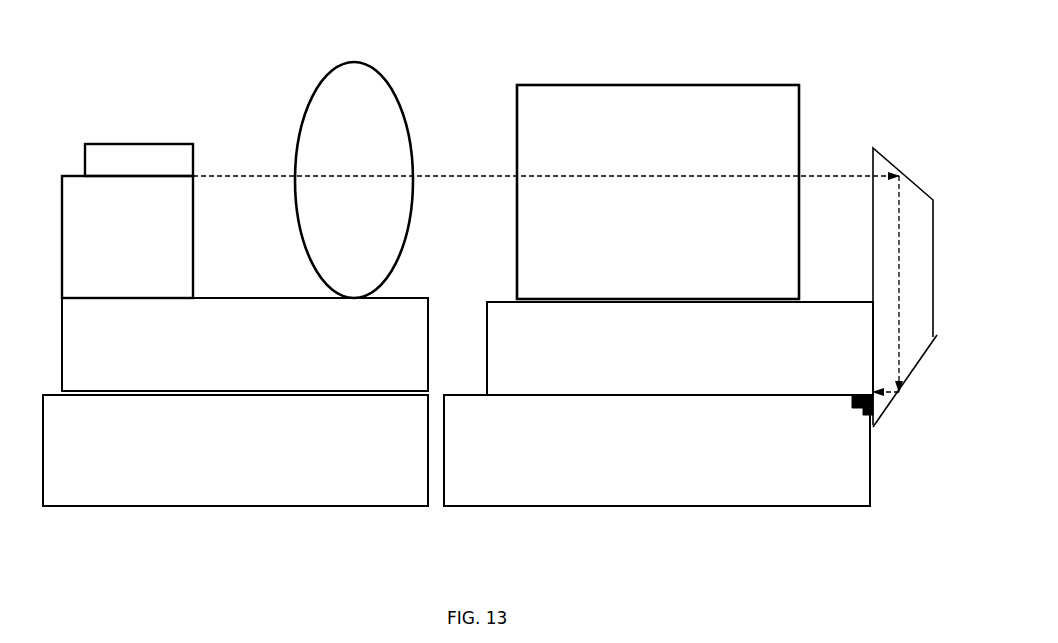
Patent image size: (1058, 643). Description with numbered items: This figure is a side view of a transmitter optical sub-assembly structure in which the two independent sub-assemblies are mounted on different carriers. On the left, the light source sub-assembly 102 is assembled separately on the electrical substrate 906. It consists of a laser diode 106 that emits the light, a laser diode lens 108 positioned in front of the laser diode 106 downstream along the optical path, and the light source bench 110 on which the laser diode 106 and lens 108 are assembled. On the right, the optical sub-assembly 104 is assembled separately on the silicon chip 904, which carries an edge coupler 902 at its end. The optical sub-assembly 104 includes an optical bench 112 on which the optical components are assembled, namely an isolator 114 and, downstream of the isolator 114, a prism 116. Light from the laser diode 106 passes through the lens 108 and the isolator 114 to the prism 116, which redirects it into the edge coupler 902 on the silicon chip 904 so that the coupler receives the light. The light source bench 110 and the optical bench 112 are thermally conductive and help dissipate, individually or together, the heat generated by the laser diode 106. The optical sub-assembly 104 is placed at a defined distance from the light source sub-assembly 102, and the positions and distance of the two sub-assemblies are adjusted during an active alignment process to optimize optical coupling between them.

The light source sub-assembly 102 is at (220, 127).
The optical sub-assembly 104 is at (748, 50).
The laser diode 106 is at (122, 157).
The laser diode lens 108 is at (362, 127).
The light source bench 110 is at (106, 338).
The optical bench 112 is at (575, 339).
The isolator 114 is at (567, 132).
The prism 116 is at (878, 162).
The edge coupler 902 is at (866, 410).
The silicon chip 904 is at (815, 505).
The electrical substrate 906 is at (73, 505).